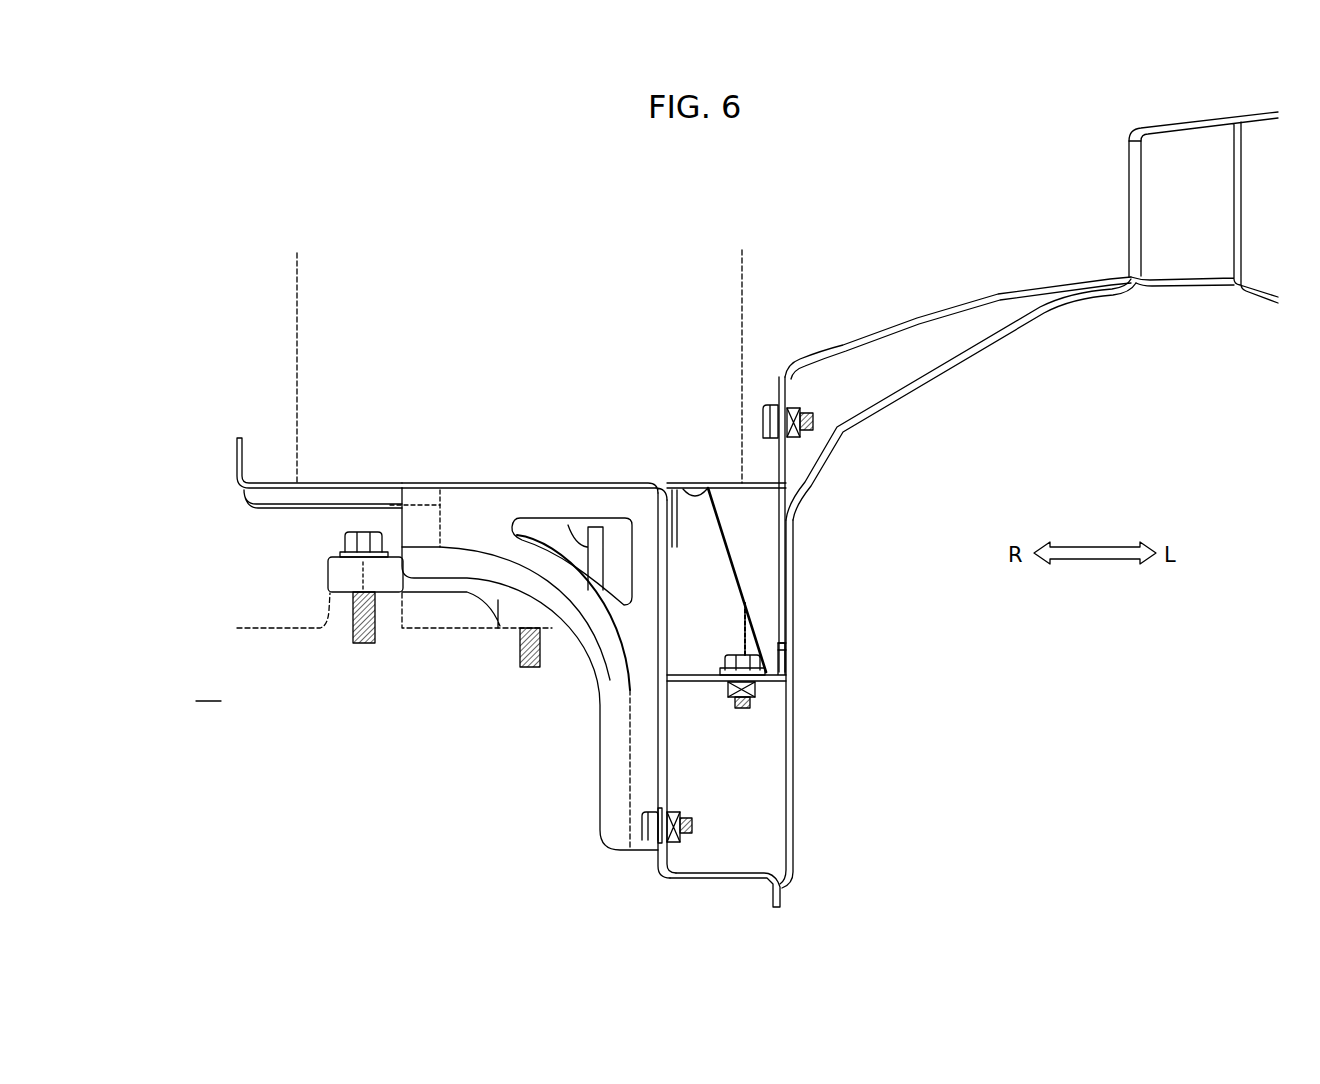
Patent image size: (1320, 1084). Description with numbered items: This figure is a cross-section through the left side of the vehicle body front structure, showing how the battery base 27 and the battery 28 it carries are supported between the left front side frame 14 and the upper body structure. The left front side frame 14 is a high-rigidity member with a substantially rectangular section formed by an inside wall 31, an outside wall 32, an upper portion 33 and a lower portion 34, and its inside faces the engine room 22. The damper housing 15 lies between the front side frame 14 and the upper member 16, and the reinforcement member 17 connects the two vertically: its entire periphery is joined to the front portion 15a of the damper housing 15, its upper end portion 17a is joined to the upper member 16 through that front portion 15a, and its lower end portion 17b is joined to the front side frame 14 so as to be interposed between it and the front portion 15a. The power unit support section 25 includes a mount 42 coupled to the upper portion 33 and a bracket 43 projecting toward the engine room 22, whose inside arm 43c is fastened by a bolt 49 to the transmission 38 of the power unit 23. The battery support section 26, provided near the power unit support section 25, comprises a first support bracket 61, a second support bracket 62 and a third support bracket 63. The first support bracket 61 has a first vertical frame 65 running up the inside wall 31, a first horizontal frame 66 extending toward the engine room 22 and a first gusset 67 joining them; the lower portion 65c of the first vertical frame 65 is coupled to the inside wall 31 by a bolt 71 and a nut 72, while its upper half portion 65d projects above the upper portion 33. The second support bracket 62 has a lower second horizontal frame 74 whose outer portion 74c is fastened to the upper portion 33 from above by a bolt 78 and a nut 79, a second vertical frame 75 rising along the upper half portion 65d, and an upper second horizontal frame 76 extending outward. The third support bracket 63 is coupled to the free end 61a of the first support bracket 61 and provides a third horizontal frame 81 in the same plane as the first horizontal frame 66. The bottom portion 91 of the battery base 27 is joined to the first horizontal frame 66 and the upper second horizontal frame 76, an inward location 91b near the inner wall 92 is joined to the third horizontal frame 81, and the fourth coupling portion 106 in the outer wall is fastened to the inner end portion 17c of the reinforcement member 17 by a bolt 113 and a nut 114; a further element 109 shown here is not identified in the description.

The front side frame 14 is at (657, 669).
The damper housing 15 is at (940, 358).
The front portion 15a is at (975, 384).
The upper member 16 is at (1180, 122).
The reinforcement member 17 is at (917, 312).
The upper end portion 17a is at (1128, 172).
The lower end portion 17b is at (792, 648).
The inner end portion 17c is at (790, 397).
The engine room 22 is at (209, 691).
The power unit 23 is at (318, 626).
The power unit support section 25 is at (325, 573).
The battery support section 26 is at (754, 535).
The battery base 27 is at (234, 462).
The battery 28 is at (297, 283).
The inside wall 31 is at (660, 770).
The outside wall 32 is at (796, 740).
The upper portion 33 is at (697, 683).
The lower portion 34 is at (722, 880).
The transmission 38 is at (318, 626).
The mount 42 is at (650, 488).
The bracket 43 is at (548, 488).
The inside arm 43c is at (366, 596).
The bolt 49 is at (352, 530).
The first support bracket 61 is at (598, 702).
The free end 61a is at (406, 488).
The second support bracket 62 is at (756, 590).
The third support bracket 63 is at (478, 488).
The first vertical frame 65 is at (629, 700).
The lower portion 65c is at (630, 805).
The upper half portion 65d is at (628, 598).
The first horizontal frame 66 is at (498, 488).
The first gusset 67 is at (506, 580).
The bolt 71 is at (648, 835).
The nut 72 is at (680, 838).
The lower second horizontal frame 74 is at (696, 672).
The outer portion 74c is at (782, 672).
The second vertical frame 75 is at (667, 600).
The upper second horizontal frame 76 is at (700, 490).
The bolt 78 is at (762, 657).
The nut 79 is at (758, 690).
The third horizontal frame 81 is at (440, 500).
The bottom portion 91 is at (305, 506).
The inward location 91b is at (372, 506).
The inner wall 92 is at (238, 497).
The fourth coupling portion 106 is at (777, 402).
The panel layer 109 is at (600, 488).
The bolt 113 is at (762, 412).
The nut 114 is at (800, 410).